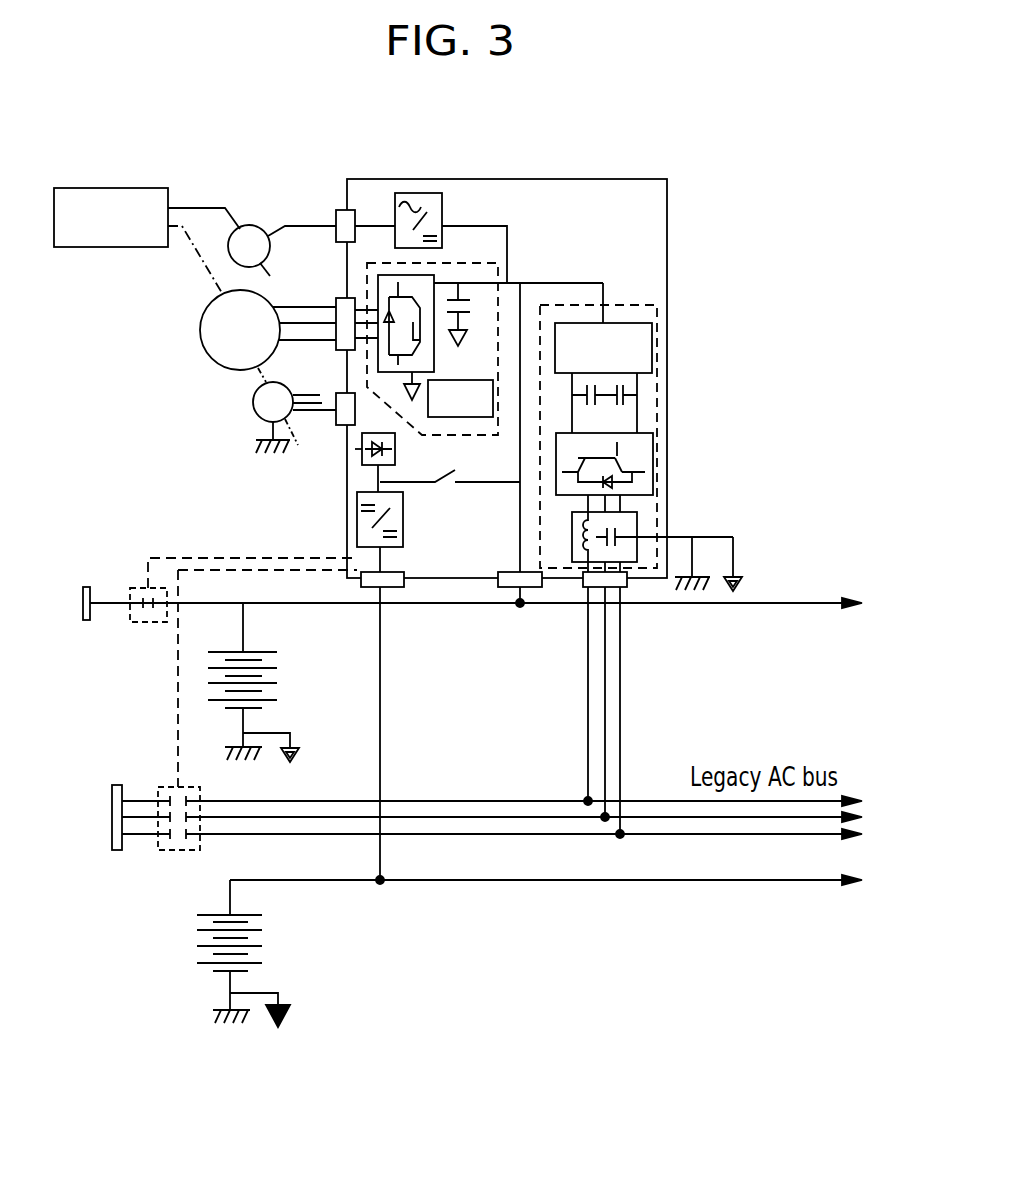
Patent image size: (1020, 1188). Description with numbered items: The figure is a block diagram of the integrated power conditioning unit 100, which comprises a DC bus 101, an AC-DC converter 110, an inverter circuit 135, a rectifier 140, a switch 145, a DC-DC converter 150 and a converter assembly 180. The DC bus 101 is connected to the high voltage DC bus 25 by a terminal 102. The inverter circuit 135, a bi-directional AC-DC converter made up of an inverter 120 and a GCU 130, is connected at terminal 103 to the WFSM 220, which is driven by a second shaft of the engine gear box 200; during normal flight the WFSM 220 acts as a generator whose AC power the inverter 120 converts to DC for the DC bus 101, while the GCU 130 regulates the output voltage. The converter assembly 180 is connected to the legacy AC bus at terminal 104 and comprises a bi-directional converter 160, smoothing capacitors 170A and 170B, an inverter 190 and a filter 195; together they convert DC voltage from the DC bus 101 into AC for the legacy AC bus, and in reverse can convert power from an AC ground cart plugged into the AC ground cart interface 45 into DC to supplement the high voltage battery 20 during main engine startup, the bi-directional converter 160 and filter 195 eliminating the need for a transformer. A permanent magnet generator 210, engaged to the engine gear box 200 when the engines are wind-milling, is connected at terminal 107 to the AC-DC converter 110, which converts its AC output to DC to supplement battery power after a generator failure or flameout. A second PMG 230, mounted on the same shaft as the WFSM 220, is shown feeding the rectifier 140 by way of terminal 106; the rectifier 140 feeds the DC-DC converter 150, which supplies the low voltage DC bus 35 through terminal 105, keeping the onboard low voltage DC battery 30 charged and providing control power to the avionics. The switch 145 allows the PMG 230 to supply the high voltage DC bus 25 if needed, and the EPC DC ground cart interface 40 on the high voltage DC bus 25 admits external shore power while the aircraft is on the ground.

The power conditioning unit 100 is at (714, 169).
The DC bus 101 is at (567, 283).
The terminal 102 is at (533, 590).
The terminal 103 is at (337, 299).
The terminal 104 is at (567, 590).
The connector 105 is at (393, 590).
The connector 106 is at (343, 394).
The terminal 107 is at (334, 218).
The AC-DC converter 110 is at (442, 207).
The inverter 120 is at (420, 284).
The GCU 130 is at (455, 417).
The inverter circuit 135 is at (470, 262).
The rectifier 140 is at (358, 449).
The switch 145 is at (445, 484).
The DC-DC converter 150 is at (357, 508).
The bi-directional converter 160 is at (633, 332).
The smoothing capacitor 170A is at (600, 408).
The smoothing capacitor 170B is at (597, 385).
The converter assembly 180 is at (628, 273).
The inverter 190 is at (640, 450).
The filter 195 is at (630, 518).
The engine gear box 200 is at (125, 248).
The permanent magnet generator 210 is at (250, 226).
The WFSM 220 is at (200, 330).
The PMG 230 is at (253, 394).
The high voltage battery 20 is at (257, 652).
The high voltage DC bus 25 is at (767, 603).
The onboard low voltage DC battery 30 is at (188, 982).
The low voltage DC bus 35 is at (722, 882).
The EPC DC ground cart interface 40 is at (148, 623).
The AC ground cart interface 45 is at (178, 851).